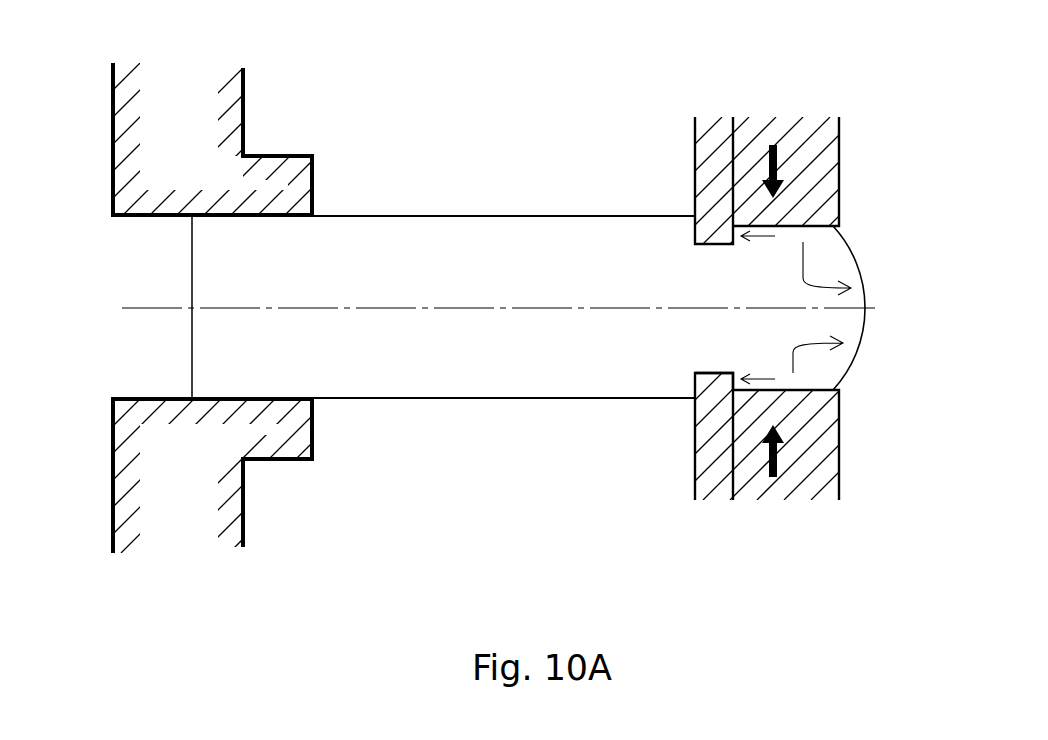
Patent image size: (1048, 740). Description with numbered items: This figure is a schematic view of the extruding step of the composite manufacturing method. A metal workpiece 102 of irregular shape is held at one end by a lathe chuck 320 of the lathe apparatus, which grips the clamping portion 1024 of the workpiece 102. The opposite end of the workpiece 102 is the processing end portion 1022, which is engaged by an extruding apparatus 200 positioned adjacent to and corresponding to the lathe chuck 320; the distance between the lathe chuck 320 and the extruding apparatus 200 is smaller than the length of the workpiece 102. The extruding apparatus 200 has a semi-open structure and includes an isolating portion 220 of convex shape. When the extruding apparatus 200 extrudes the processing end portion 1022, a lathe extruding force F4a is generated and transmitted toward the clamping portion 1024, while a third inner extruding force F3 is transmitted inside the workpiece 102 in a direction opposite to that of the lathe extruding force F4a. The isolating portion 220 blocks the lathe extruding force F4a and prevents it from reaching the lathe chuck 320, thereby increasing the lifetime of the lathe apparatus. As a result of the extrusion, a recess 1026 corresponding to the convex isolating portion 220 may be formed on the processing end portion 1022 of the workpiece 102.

The workpiece 102 is at (503, 216).
The processing end portion 1022 is at (855, 335).
The clamping portion 1024 is at (192, 245).
The recess 1026 is at (712, 372).
The extruding apparatus 200 is at (839, 160).
The isolating portion 220 is at (712, 380).
The lathe chuck 320 is at (245, 122).
The third inner extruding force F3 is at (849, 307).
The lathe extruding force F4a is at (764, 307).